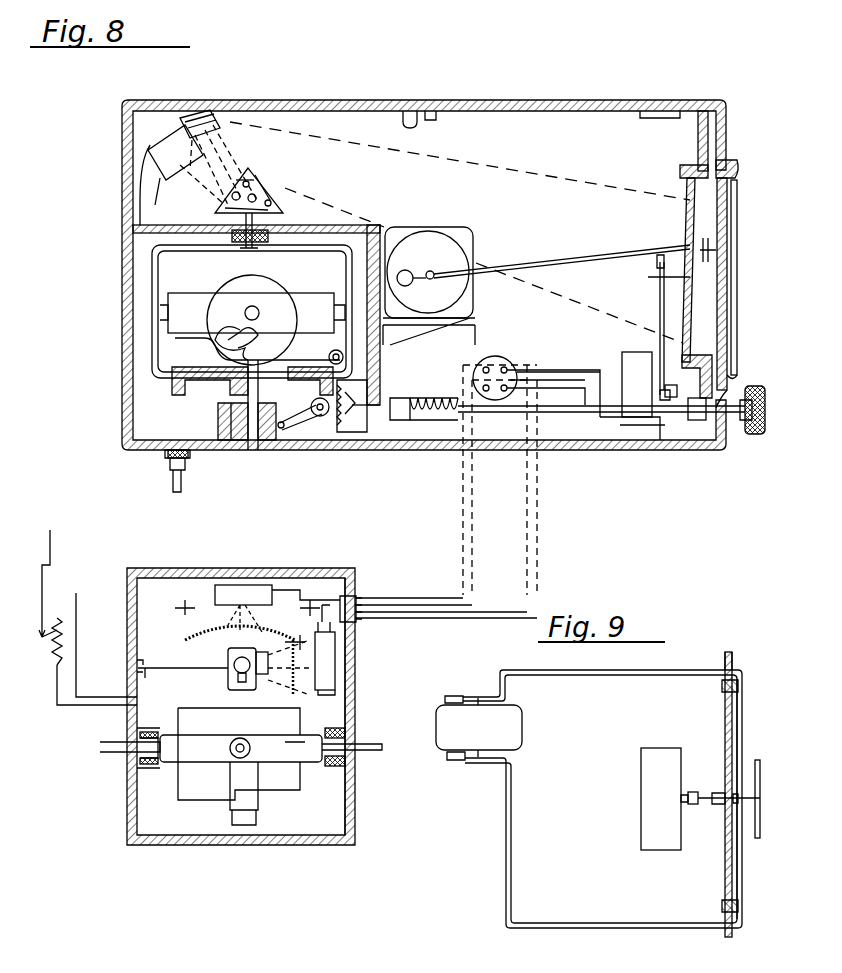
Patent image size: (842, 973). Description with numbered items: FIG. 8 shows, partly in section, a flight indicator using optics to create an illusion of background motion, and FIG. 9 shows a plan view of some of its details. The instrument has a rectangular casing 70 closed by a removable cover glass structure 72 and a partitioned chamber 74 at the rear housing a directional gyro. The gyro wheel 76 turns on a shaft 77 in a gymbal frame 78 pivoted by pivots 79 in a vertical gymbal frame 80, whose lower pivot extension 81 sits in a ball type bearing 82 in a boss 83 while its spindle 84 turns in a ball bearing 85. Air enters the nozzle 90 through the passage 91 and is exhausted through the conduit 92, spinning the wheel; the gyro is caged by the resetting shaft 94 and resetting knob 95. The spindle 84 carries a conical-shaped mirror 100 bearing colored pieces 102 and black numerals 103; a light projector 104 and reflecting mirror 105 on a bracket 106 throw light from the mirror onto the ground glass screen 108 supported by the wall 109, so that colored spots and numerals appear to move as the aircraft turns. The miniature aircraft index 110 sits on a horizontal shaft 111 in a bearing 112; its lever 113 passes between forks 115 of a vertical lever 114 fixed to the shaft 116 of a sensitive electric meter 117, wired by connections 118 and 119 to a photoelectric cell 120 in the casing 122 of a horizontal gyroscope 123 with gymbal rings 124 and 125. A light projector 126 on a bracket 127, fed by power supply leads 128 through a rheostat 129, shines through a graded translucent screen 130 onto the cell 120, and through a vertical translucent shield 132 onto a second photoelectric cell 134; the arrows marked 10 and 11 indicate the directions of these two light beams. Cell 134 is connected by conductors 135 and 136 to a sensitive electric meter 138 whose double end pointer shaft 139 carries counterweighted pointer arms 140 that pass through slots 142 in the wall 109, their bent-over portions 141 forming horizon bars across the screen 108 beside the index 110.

In FIG. 8, the light beam 10 is at (247, 612).
In FIG. 8, the light beam 11 is at (304, 686).
In FIG. 8, the casing 70 is at (124, 434).
In FIG. 8, the cover glass structure 72 is at (724, 156).
In FIG. 8, the partitioned chamber 74 is at (345, 228).
In FIG. 8, the gyro wheel 76 is at (238, 286).
In FIG. 8, the shaft 77 is at (258, 312).
In FIG. 8, the gymbal frame 78 is at (290, 338).
In FIG. 8, the pivots 79 is at (165, 305).
In FIG. 8, the vertical gymbal frame 80 is at (350, 252).
In FIG. 8, the lower pivot extension 81 is at (218, 383).
In FIG. 8, the ball type bearing 82 is at (222, 402).
In FIG. 8, the boss 83 is at (296, 448).
In FIG. 8, the spindle 84 is at (272, 228).
In FIG. 8, the ball bearing 85 is at (262, 245).
In FIG. 8, the nozzle 90 is at (226, 333).
In FIG. 8, the passage 91 is at (250, 452).
In FIG. 8, the conduit 92 is at (182, 485).
In FIG. 8, the resetting shaft 94 is at (534, 413).
In FIG. 8, the resetting knob 95 is at (754, 435).
In FIG. 8, the conical-shaped mirror 100 is at (288, 197).
In FIG. 8, the colored pieces 102 is at (272, 190).
In FIG. 8, the black numerals 103 is at (256, 180).
In FIG. 8, the light projector 104 is at (170, 180).
In FIG. 8, the reflecting mirror 105 is at (212, 128).
In FIG. 8, the bracket 106 is at (145, 210).
In FIG. 8, the ground glass screen 108 is at (686, 212).
In FIG. 9, the ground glass screen 108 is at (724, 704).
In FIG. 8, the wall 109 is at (698, 148).
In FIG. 9, the wall 109 is at (730, 658).
In FIG. 8, the miniature aircraft index 110 is at (735, 312).
In FIG. 9, the miniature aircraft index 110 is at (780, 750).
In FIG. 8, the horizontal shaft 111 is at (712, 250).
In FIG. 9, the horizontal shaft 111 is at (705, 806).
In FIG. 8, the bearing 112 is at (662, 320).
In FIG. 9, the bearing 112 is at (730, 810).
In FIG. 8, the lever 113 is at (660, 292).
In FIG. 8, the vertical lever 114 is at (660, 398).
In FIG. 8, the forks 115 is at (662, 388).
In FIG. 9, the forks 115 is at (694, 792).
In FIG. 8, the shaft 116 is at (660, 448).
In FIG. 9, the shaft 116 is at (688, 795).
In FIG. 8, the sensitive electric meter 117 is at (625, 365).
In FIG. 9, the sensitive electric meter 117 is at (652, 850).
In FIG. 8, the electrical connection 118 is at (535, 375).
In FIG. 8, the electrical connection 119 is at (540, 380).
In FIG. 8, the photoelectric cell 120 is at (248, 585).
In FIG. 8, the casing 122 is at (348, 714).
In FIG. 8, the horizontal gyroscope 123 is at (264, 770).
In FIG. 8, the gymbal ring 124 is at (250, 822).
In FIG. 8, the gymbal ring 125 is at (250, 740).
In FIG. 8, the light projector 126 is at (236, 648).
In FIG. 8, the bracket 127 is at (148, 668).
In FIG. 8, the power supply leads 128 is at (85, 688).
In FIG. 8, the rheostat 129 is at (55, 650).
In FIG. 8, the translucent screen 130 is at (215, 625).
In FIG. 8, the vertical translucent shield 132 is at (340, 692).
In FIG. 8, the photoelectric cell 134 is at (332, 680).
In FIG. 8, the conductor 135 is at (460, 517).
In FIG. 8, the conductor 136 is at (470, 510).
In FIG. 8, the sensitive electric meter 138 is at (466, 234).
In FIG. 9, the sensitive electric meter 138 is at (440, 745).
In FIG. 8, the double end pointer shaft 139 is at (430, 280).
In FIG. 9, the double end pointer shaft 139 is at (462, 698).
In FIG. 8, the counterweighted pointer arm 140 is at (572, 262).
In FIG. 9, the counterweighted pointer arm 140 is at (576, 670).
In FIG. 8, the bent-over portion 141 is at (728, 226).
In FIG. 9, the bent-over portion 141 is at (742, 694).
In FIG. 9, the slots 142 is at (724, 682).